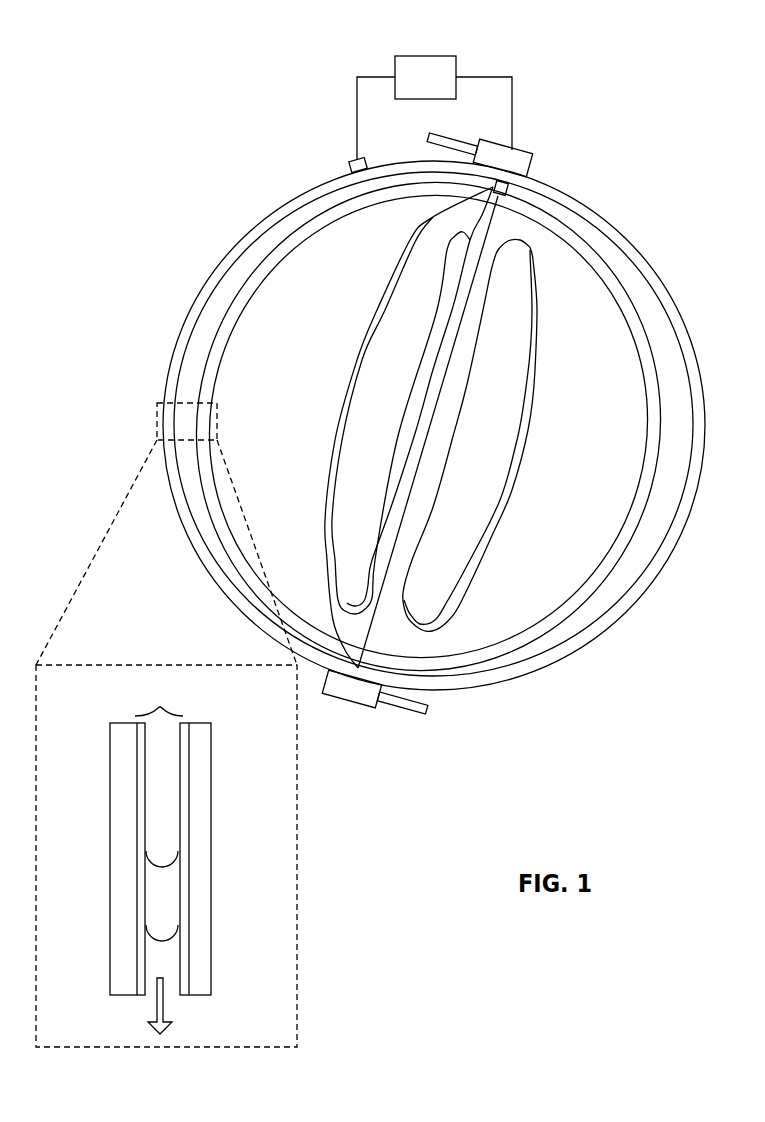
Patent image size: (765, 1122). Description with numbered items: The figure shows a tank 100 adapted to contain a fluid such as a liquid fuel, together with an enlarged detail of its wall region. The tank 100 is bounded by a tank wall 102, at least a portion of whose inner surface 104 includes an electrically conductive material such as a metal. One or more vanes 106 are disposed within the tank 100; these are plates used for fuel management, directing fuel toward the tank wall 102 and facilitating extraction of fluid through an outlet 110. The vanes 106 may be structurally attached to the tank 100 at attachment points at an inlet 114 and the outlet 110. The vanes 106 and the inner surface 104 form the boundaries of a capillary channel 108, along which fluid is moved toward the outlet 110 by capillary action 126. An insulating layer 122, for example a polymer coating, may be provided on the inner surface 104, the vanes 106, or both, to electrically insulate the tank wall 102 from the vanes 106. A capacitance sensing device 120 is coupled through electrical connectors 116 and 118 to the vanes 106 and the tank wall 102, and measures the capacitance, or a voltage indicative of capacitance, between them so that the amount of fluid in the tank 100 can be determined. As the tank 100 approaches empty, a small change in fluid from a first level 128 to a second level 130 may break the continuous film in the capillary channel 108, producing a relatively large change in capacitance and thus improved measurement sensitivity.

The tank 100 is at (633, 48).
The tank wall 102 is at (272, 212).
The inner surface 104 is at (228, 270).
The vanes 106 is at (297, 263).
The capillary channel 108 is at (347, 209).
The outlet 110 is at (352, 703).
The inlet 114 is at (522, 148).
The electrical connector 116 is at (510, 187).
The electrical connector 118 is at (350, 160).
The capacitance sensing device 120 is at (402, 56).
The insulating layer 122 is at (187, 720).
The capillary action 126 is at (152, 1023).
The first level 128 is at (165, 858).
The second level 130 is at (162, 940).